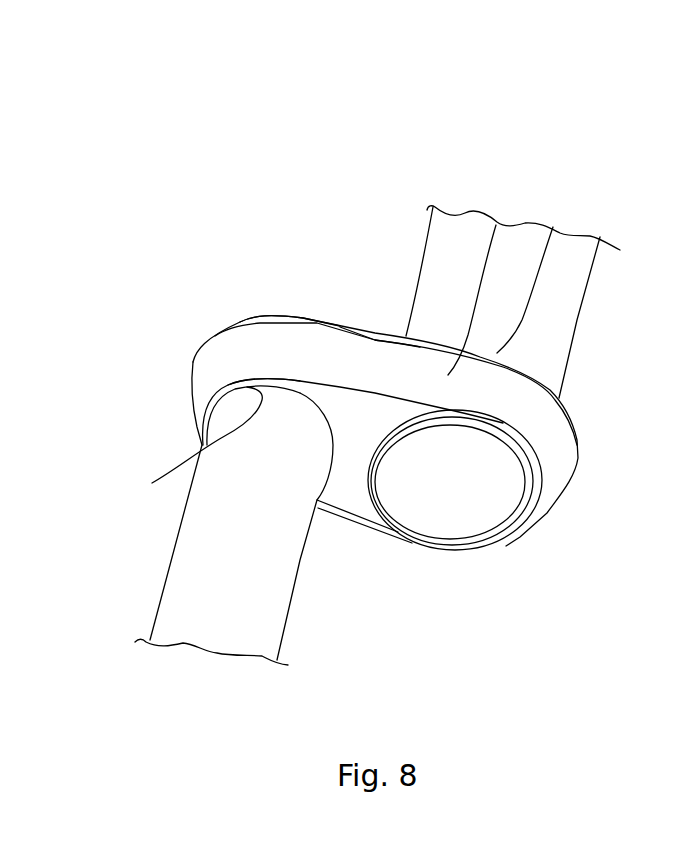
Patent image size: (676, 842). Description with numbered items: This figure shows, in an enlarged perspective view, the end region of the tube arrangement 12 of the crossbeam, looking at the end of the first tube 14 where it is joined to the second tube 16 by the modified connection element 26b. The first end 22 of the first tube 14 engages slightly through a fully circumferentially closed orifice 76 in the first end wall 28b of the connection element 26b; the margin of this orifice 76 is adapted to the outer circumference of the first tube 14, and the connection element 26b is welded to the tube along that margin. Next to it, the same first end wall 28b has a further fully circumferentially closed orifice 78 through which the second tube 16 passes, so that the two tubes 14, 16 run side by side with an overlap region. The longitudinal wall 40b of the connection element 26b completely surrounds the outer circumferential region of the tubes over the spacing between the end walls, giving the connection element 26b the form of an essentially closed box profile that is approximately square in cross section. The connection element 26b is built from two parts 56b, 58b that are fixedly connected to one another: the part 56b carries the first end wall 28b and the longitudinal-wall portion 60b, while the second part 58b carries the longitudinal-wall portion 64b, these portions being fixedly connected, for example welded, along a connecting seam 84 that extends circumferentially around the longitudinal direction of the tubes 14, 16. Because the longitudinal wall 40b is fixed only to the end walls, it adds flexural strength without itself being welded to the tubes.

The tube arrangement 12 is at (543, 128).
The first tube 14 is at (572, 280).
The second tube 16 is at (188, 568).
The first end 22 is at (452, 549).
The connection element 26b is at (323, 298).
The first end wall 28b is at (352, 476).
The longitudinal wall 40b is at (256, 334).
The part 56b is at (239, 371).
The second part 58b is at (377, 318).
The longitudinal-wall portion 60b is at (553, 227).
The longitudinal-wall portion 64b is at (292, 320).
The orifice 76 is at (503, 423).
The orifice 78 is at (187, 449).
The connecting seam 84 is at (496, 225).